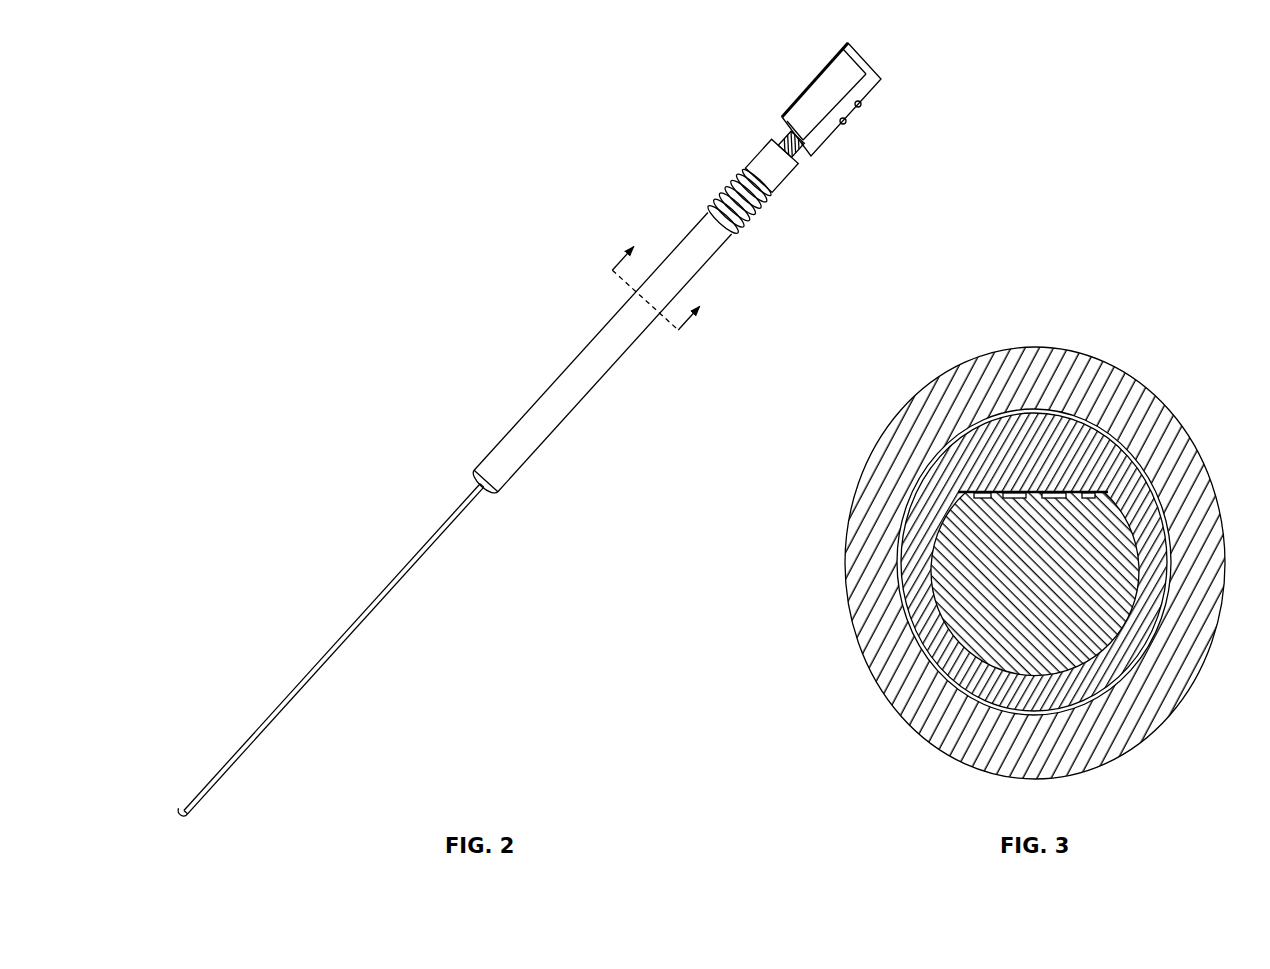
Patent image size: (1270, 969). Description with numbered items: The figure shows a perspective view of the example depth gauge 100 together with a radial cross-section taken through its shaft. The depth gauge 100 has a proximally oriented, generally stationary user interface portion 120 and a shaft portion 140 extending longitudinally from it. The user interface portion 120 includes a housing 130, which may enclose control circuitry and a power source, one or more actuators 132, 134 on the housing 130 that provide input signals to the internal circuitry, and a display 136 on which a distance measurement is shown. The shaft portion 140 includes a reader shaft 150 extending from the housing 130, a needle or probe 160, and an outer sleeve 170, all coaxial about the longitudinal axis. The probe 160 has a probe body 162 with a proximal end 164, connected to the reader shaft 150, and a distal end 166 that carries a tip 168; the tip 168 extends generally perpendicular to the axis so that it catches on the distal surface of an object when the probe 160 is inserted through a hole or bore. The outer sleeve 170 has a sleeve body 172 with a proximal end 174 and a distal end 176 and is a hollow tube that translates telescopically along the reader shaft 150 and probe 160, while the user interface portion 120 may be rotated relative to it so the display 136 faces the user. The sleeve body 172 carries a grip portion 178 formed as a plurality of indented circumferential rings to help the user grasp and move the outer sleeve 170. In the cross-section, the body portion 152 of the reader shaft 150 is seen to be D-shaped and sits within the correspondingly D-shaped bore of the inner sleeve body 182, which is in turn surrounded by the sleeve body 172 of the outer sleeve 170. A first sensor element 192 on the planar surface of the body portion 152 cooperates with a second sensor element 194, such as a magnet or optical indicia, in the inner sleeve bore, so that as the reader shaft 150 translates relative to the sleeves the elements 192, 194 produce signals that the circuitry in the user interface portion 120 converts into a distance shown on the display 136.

In FIG. 2, the depth gauge 100 is at (424, 144).
In FIG. 2, the user interface portion 120 is at (802, 66).
In FIG. 2, the housing 130 is at (865, 52).
In FIG. 2, the actuator 132 is at (862, 107).
In FIG. 2, the actuator 134 is at (847, 124).
In FIG. 2, the display 136 is at (810, 102).
In FIG. 2, the shaft portion 140 is at (607, 494).
In FIG. 2, the reader shaft 150 is at (801, 163).
In FIG. 3, the body portion 152 is at (868, 654).
In FIG. 2, the probe 160 is at (350, 614).
In FIG. 2, the probe body 162 is at (385, 600).
In FIG. 2, the proximal end 164 is at (483, 503).
In FIG. 2, the distal end 166 is at (190, 785).
In FIG. 2, the tip 168 is at (186, 810).
In FIG. 2, the outer sleeve 170 is at (603, 308).
In FIG. 2, the sleeve body 172 is at (716, 252).
In FIG. 3, the sleeve body 172 is at (858, 527).
In FIG. 2, the proximal end 174 is at (775, 190).
In FIG. 2, the distal end 176 is at (482, 452).
In FIG. 2, the grip portion 178 is at (753, 224).
In FIG. 3, the sleeve body 182 is at (1148, 462).
In FIG. 3, the first sensor element 192 is at (993, 488).
In FIG. 3, the second sensor element 194 is at (1037, 487).